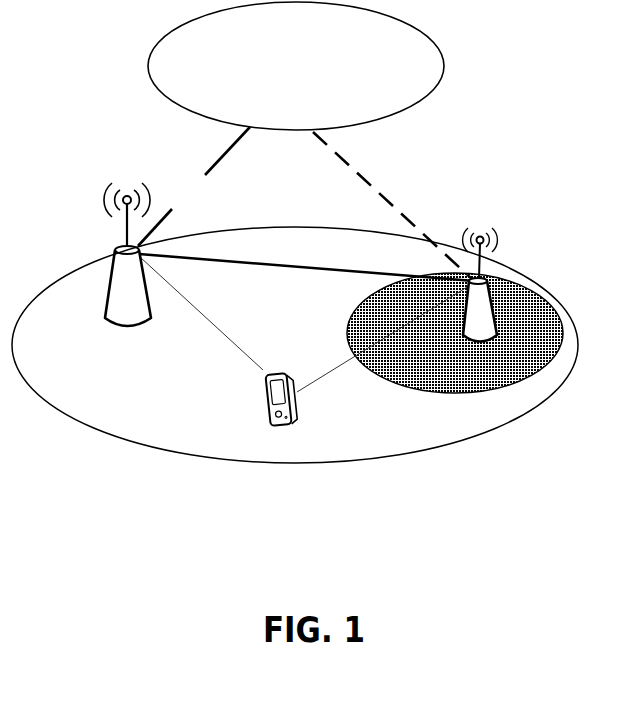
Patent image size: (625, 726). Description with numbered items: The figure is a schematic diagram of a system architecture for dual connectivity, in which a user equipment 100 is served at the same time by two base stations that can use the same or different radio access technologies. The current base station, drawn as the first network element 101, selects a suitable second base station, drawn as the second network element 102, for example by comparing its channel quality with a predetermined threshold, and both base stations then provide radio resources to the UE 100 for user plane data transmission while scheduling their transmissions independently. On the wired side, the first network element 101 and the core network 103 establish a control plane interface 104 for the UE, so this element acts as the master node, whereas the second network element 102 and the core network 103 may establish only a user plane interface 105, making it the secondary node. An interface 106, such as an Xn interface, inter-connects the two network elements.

The user equipment (mobile terminal) 100 is at (283, 417).
The first base station 101 is at (127, 272).
The second base station 102 is at (480, 303).
The core network 103 is at (296, 66).
The control plane interface 104 is at (194, 186).
The user plane interface 105 is at (393, 206).
The interface 106 is at (306, 268).